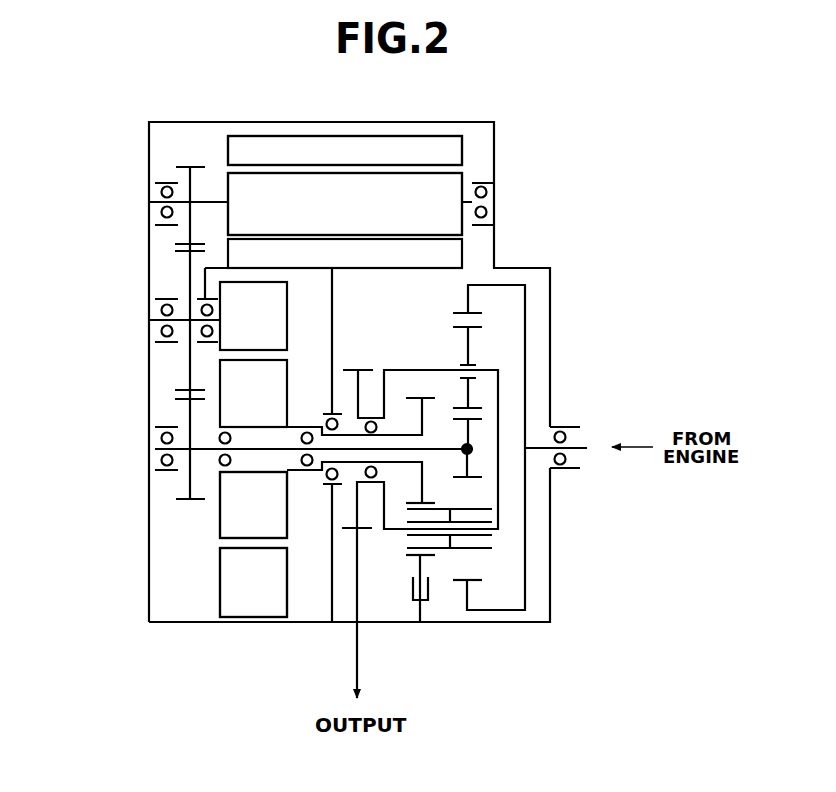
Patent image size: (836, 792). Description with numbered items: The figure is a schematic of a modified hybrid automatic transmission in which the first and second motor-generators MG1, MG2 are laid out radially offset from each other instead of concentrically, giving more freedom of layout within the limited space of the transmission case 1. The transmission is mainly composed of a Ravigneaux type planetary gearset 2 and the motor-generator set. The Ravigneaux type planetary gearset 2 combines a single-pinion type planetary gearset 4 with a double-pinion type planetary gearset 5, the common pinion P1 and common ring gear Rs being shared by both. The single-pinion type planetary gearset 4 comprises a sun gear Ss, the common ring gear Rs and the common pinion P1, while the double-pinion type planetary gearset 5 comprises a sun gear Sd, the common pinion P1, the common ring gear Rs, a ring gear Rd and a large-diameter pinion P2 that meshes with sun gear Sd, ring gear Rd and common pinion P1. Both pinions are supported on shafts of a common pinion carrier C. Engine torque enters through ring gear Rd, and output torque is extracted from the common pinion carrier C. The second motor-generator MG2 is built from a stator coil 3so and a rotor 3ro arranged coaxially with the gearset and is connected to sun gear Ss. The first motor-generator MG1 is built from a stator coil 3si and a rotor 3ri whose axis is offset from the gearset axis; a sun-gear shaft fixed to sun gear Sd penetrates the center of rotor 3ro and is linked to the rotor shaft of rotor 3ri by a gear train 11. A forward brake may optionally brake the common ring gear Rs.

The transmission case 1 is at (550, 597).
The Ravigneaux type planetary gearset 2 is at (513, 702).
The single-pinion type planetary gearset 4 is at (432, 632).
The double-pinion type planetary gearset 5 is at (496, 632).
The gear train 11 is at (190, 231).
The first motor-generator MG1 is at (480, 148).
The second motor-generator MG2 is at (200, 553).
The rotor 3ri is at (312, 186).
The stator coil 3si is at (380, 147).
The rotor 3ro is at (224, 515).
The stator coil 3so is at (224, 598).
The ring gear Rd is at (462, 313).
The sun gear Ss is at (417, 397).
The large-diameter pinion P2 is at (477, 327).
The sun gear Sd is at (475, 480).
The common pinion carrier C is at (498, 520).
The common pinion P1 is at (477, 552).
The common ring gear Rs is at (413, 563).